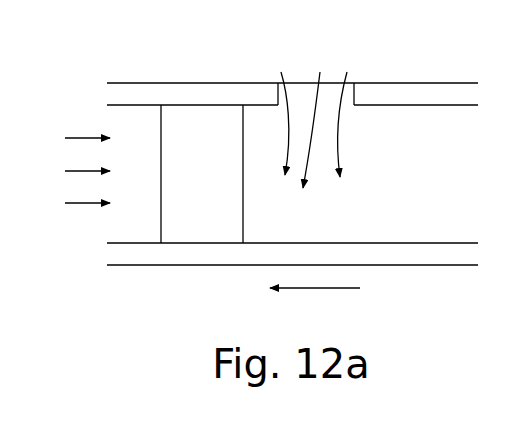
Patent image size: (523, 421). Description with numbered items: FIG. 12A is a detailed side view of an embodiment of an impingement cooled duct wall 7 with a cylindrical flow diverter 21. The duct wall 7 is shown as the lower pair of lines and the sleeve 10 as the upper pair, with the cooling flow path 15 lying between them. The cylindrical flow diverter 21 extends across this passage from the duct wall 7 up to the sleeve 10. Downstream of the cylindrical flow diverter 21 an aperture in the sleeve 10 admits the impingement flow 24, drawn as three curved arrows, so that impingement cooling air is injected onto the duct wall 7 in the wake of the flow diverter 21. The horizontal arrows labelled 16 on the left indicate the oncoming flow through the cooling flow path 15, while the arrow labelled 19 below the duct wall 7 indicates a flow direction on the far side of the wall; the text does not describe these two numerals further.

The sleeve 10 is at (459, 90).
The impingement flow 24 is at (298, 98).
The cooling flow path 15 is at (378, 130).
The duct wall 7 is at (425, 253).
The cylindrical flow diverter 21 is at (197, 225).
The main air flow 16 is at (101, 170).
The reverse flow direction 19 is at (315, 301).